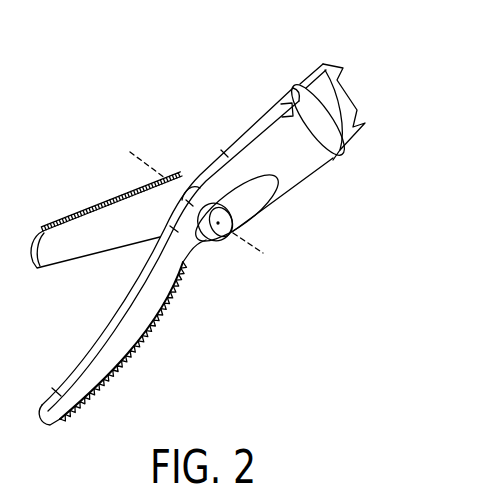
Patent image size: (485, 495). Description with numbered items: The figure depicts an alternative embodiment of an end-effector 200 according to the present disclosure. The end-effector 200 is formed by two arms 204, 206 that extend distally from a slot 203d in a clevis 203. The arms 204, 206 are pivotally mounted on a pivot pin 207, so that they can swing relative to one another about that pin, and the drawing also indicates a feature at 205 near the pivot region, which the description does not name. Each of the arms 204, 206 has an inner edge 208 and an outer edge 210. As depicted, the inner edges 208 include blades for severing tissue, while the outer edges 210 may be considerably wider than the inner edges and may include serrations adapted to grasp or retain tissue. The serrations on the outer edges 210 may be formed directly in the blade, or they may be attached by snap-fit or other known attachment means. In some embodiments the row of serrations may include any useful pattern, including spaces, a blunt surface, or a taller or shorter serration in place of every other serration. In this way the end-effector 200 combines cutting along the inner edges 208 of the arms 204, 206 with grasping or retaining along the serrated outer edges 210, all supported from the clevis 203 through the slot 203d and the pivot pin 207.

The end-effector 200 is at (166, 45).
The clevis 203 is at (286, 80).
The slot 203d is at (333, 158).
The arm 204 is at (132, 192).
The pivot axis 205 is at (253, 240).
The arm 206 is at (178, 257).
The pivot pin 207 is at (232, 233).
The inner edge 208 is at (92, 357).
The outer edge 210 is at (107, 382).